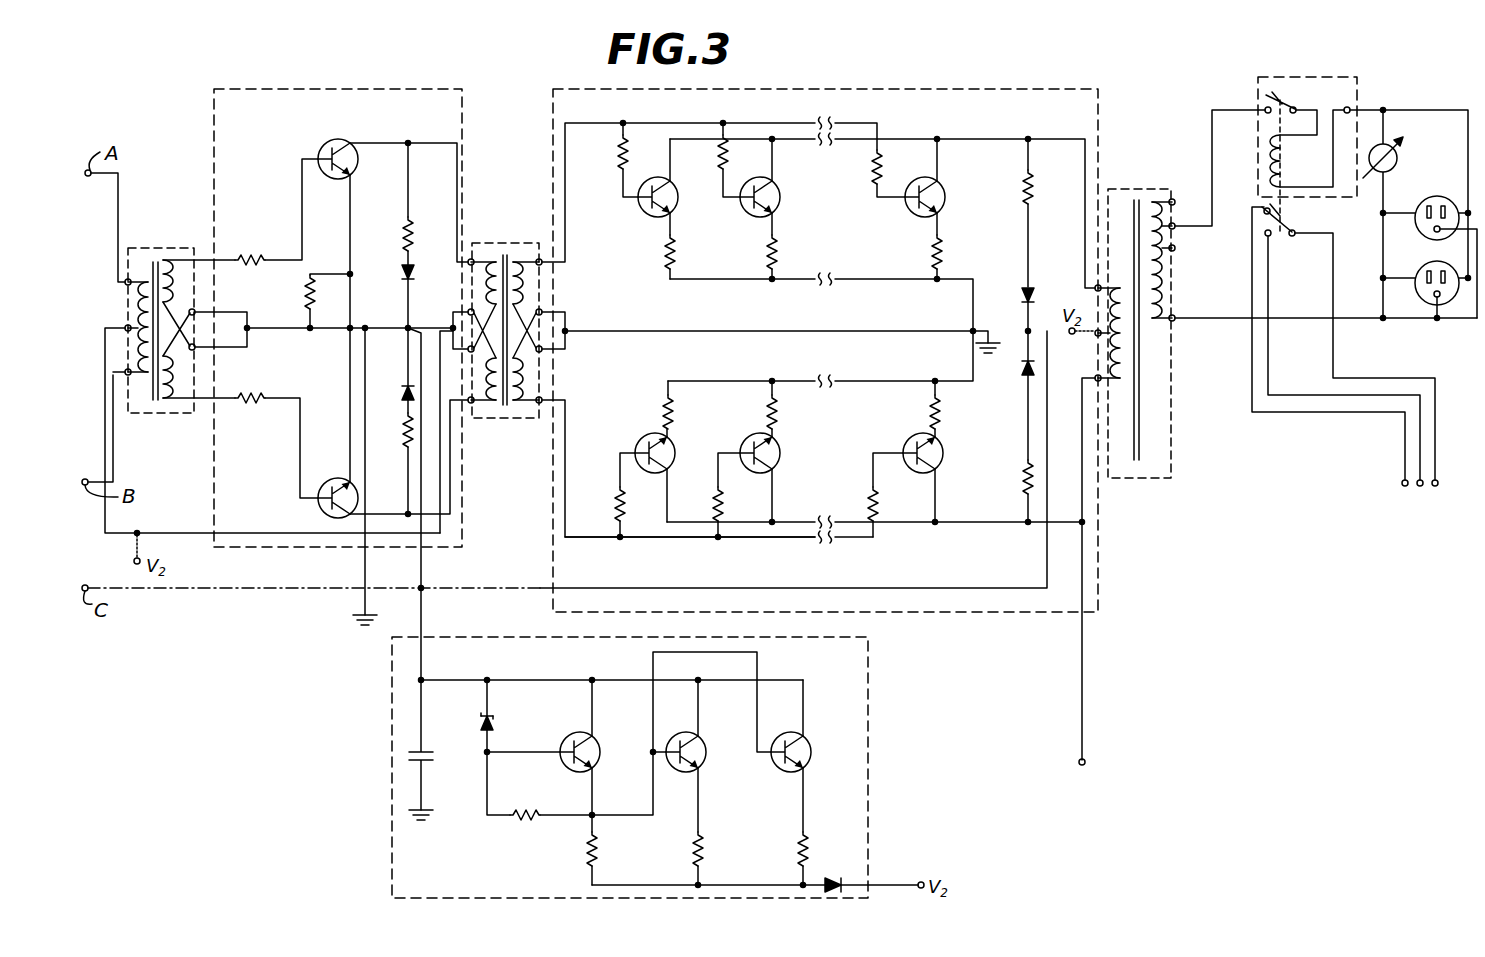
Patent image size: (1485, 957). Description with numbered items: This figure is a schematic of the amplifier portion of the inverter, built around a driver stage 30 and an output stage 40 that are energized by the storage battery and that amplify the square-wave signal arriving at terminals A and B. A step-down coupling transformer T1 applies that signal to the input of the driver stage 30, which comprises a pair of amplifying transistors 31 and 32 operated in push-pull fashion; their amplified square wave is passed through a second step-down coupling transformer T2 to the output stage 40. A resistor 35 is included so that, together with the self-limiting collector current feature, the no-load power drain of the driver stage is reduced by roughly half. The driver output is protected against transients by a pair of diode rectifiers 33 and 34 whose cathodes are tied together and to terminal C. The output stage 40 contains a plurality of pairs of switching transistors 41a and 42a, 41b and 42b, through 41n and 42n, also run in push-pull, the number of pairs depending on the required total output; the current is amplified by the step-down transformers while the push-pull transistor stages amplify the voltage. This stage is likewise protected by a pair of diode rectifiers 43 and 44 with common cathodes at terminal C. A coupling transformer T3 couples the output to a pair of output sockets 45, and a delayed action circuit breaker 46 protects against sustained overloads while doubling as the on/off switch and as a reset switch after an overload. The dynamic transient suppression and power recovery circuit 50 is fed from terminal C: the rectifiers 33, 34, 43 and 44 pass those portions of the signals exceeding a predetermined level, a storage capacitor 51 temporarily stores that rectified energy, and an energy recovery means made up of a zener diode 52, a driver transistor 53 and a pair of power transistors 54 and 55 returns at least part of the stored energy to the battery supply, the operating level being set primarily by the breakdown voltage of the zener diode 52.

The driver stage 30 is at (403, 89).
The amplifying transistor 31 is at (326, 143).
The amplifying transistor 32 is at (318, 505).
The diode rectifier 33 is at (402, 272).
The diode rectifier 34 is at (402, 390).
The resistor 35 is at (302, 293).
The output stage 40 is at (850, 89).
The switching transistor 41a is at (643, 211).
The switching transistor 41b is at (747, 211).
The switching transistor 41n is at (913, 212).
The switching transistor 42a is at (642, 438).
The switching transistor 42b is at (748, 438).
The switching transistor 42n is at (910, 442).
The diode rectifier 43 is at (1020, 298).
The diode rectifier 44 is at (1020, 370).
The output sockets 45 is at (1418, 268).
The delayed action circuit breaker 46 is at (1300, 77).
The dynamic transient suppression and power recovery circuit 50 is at (868, 747).
The storage capacitor 51 is at (430, 752).
The zener diode 52 is at (495, 724).
The driver transistor 53 is at (596, 740).
The power transistor 54 is at (702, 740).
The power transistor 55 is at (807, 740).
The coupling transformer T1 is at (180, 246).
The coupling transformer T2 is at (520, 244).
The coupling transformer T3 is at (1158, 188).